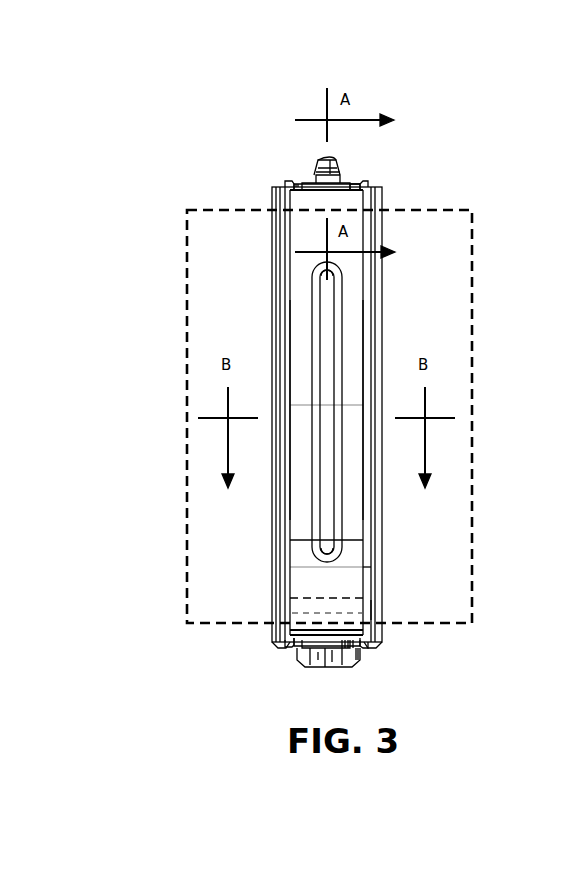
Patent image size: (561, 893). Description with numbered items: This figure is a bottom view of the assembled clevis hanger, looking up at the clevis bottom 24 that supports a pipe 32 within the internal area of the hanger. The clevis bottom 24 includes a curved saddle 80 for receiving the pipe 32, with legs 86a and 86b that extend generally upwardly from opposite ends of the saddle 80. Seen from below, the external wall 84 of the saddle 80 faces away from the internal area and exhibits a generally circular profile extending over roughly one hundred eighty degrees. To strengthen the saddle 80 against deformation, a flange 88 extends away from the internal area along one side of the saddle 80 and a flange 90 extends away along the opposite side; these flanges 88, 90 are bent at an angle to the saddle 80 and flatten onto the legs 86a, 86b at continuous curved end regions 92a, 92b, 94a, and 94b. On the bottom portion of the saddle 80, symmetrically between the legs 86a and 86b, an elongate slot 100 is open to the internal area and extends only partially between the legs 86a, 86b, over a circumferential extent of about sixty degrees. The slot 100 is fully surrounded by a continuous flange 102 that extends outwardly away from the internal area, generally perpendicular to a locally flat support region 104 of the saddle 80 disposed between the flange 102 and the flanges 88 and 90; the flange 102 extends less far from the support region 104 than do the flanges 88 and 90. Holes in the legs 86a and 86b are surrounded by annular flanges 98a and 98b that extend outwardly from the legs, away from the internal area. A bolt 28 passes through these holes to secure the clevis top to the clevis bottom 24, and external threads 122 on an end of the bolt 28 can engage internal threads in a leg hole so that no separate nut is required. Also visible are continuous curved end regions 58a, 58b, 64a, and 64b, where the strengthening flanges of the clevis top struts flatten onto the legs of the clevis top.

The clevis bottom 24 is at (232, 325).
The bolt 28 is at (320, 162).
The pipe 32 is at (187, 615).
The continuous curved end region 58a is at (355, 184).
The continuous curved end region 58b is at (367, 645).
The continuous curved end region 64a is at (283, 184).
The continuous curved end region 64b is at (293, 646).
The curved saddle 80 is at (270, 280).
The external wall 84 is at (382, 602).
The leg 86a is at (288, 167).
The leg 86b is at (362, 652).
The flange 88 is at (375, 543).
The flange 90 is at (300, 550).
The continuous curved end region 92a is at (365, 181).
The continuous curved end region 92b is at (375, 643).
The continuous curved end region 94a is at (273, 187).
The continuous curved end region 94b is at (288, 644).
The annular flange 98a is at (302, 184).
The annular flange 98b is at (305, 649).
The elongate slot 100 is at (334, 502).
The continuous flange 102 is at (312, 495).
The locally flat support region 104 is at (294, 523).
The external threads 122 is at (340, 163).